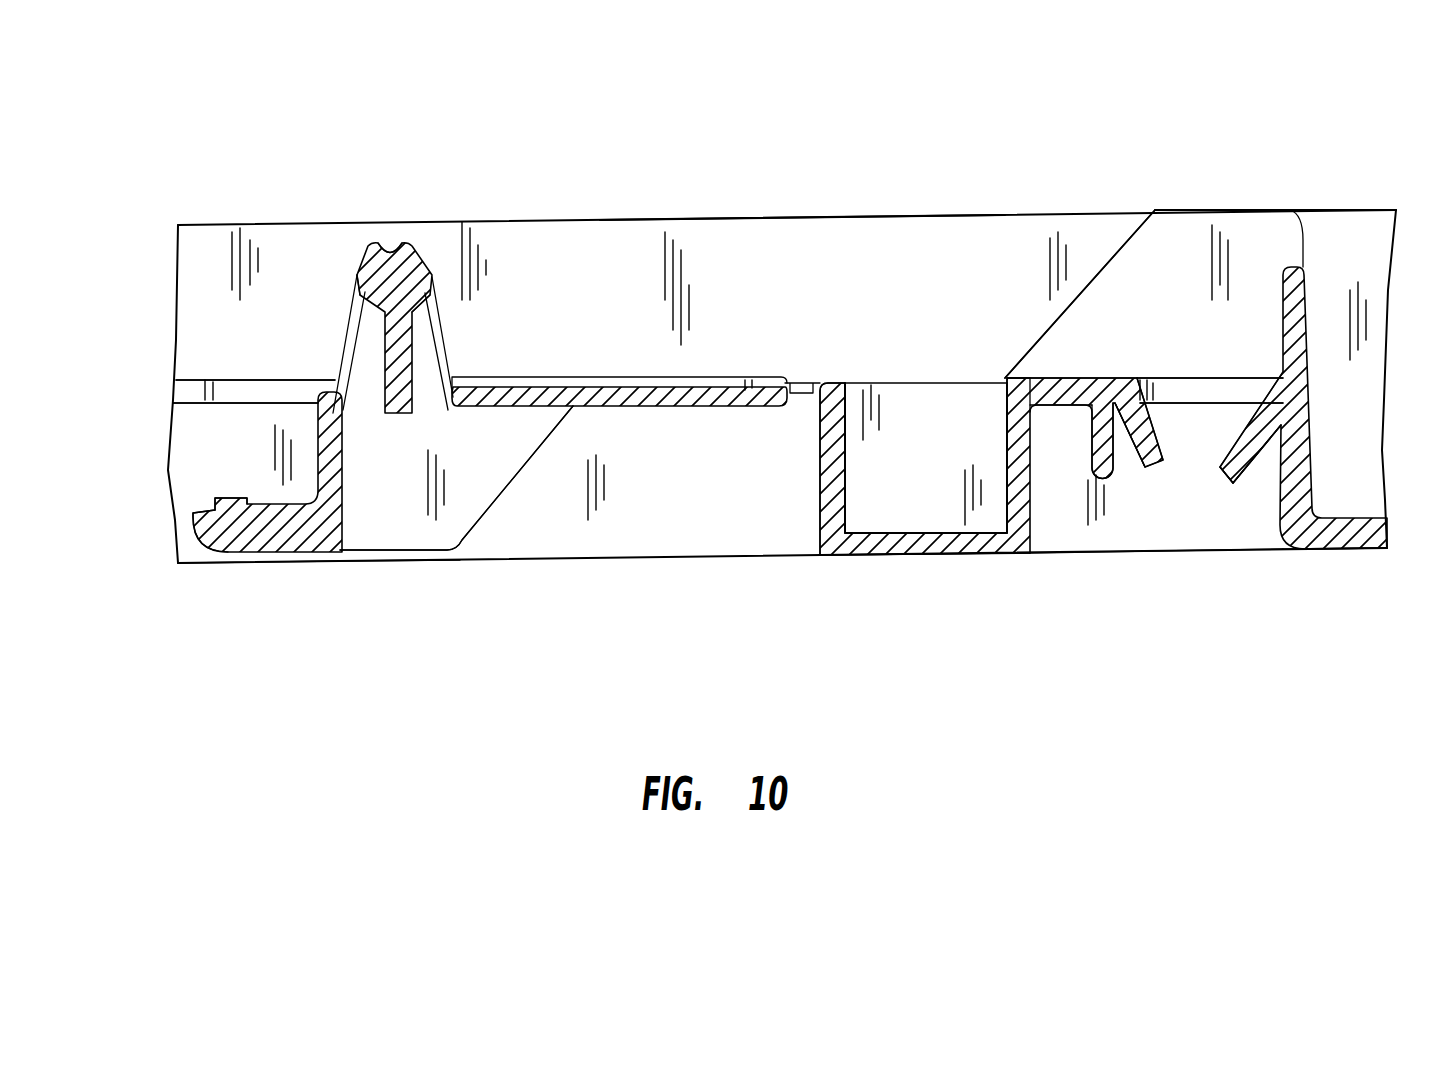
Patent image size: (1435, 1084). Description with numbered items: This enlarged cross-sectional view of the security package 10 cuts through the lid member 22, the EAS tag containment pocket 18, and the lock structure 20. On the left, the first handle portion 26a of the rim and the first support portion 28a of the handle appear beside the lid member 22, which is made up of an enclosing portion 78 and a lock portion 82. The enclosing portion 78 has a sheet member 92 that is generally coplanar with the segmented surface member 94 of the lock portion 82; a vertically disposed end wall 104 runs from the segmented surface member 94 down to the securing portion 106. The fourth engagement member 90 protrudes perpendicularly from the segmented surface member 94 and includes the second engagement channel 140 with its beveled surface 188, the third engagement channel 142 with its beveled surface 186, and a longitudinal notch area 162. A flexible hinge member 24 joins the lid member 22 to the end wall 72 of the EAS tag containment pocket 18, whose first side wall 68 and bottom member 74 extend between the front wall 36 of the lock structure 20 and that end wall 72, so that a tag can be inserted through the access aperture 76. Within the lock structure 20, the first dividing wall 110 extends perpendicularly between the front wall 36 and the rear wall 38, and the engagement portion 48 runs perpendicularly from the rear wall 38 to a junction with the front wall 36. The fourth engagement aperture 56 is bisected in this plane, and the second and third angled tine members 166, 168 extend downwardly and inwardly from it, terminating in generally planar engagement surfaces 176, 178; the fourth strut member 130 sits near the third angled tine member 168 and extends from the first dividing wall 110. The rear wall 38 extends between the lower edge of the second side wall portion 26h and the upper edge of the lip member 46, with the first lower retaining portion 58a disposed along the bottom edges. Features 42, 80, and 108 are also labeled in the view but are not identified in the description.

The security package 10 is at (690, 135).
The EAS tag containment pocket 18 is at (910, 570).
The lock structure 20 is at (1172, 190).
The lid member 22 is at (615, 247).
The hinge member 24 is at (793, 395).
The first handle portion 26a is at (815, 215).
The second side wall portion 26h is at (1333, 218).
The first support portion 28a is at (217, 375).
The front wall 36 is at (1007, 439).
The rear wall 38 is at (1324, 345).
The sloped surface 42 is at (1187, 230).
The lip member 46 is at (1305, 277).
The engagement portion 48 is at (1066, 377).
The fourth engagement aperture 56 is at (1200, 413).
The first lower retaining portion 58a is at (1355, 562).
The first side wall 68 is at (878, 518).
The end wall 72 is at (820, 498).
The bottom member 74 is at (903, 533).
The access aperture 76 is at (914, 393).
The enclosing portion 78 is at (603, 554).
The bottom surface 80 is at (243, 579).
The lock portion 82 is at (363, 577).
The fourth engagement member 90 is at (353, 283).
The sheet member 92 is at (663, 408).
The segmented surface member 94 is at (555, 385).
The end wall 104 is at (338, 477).
The securing portion 106 is at (195, 523).
The ledge 108 is at (240, 498).
The first dividing wall 110 is at (1065, 545).
The fourth strut member 130 is at (1088, 427).
The second engagement channel 140 is at (438, 345).
The third engagement channel 142 is at (357, 332).
The longitudinal notch area 162 is at (393, 250).
The second angled tine member 166 is at (1240, 487).
The third angled tine member 168 is at (1147, 468).
The engagement surface 176 is at (1226, 470).
The engagement surface 178 is at (1162, 468).
The beveled surface 186 is at (357, 297).
The beveled surface 188 is at (417, 307).